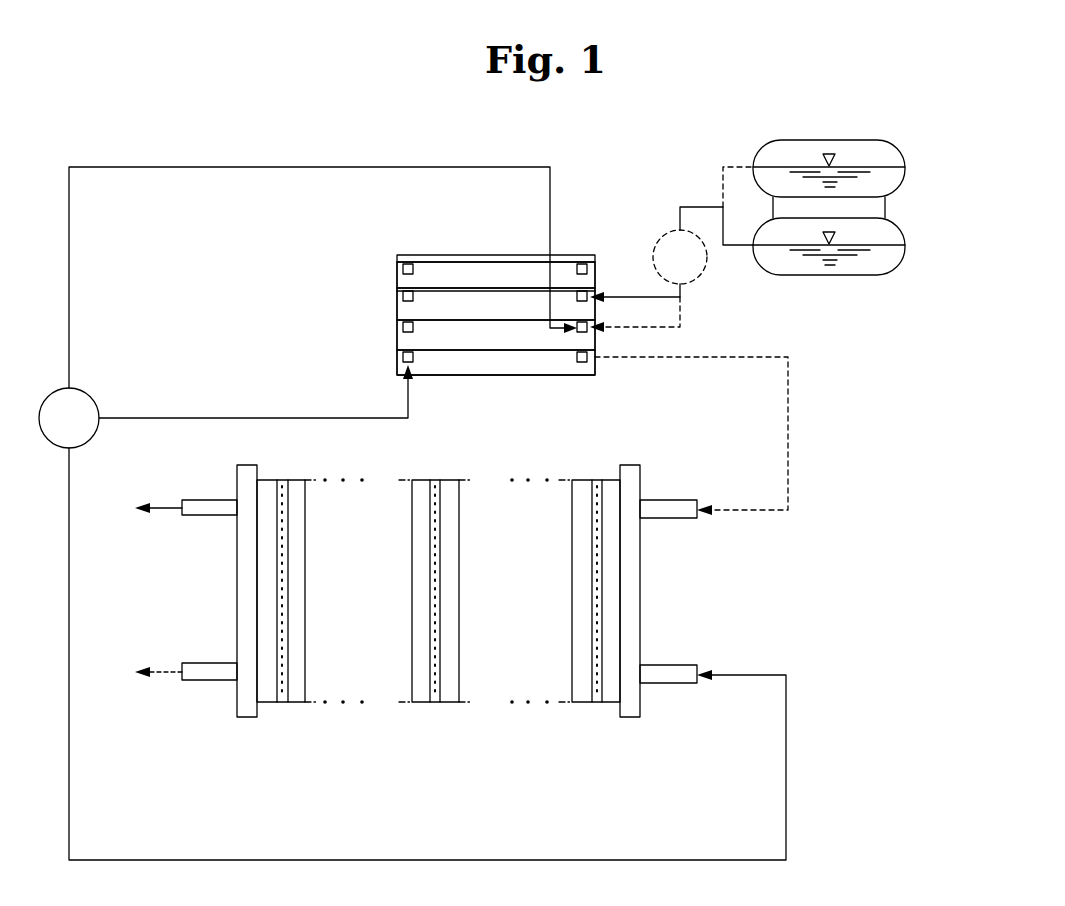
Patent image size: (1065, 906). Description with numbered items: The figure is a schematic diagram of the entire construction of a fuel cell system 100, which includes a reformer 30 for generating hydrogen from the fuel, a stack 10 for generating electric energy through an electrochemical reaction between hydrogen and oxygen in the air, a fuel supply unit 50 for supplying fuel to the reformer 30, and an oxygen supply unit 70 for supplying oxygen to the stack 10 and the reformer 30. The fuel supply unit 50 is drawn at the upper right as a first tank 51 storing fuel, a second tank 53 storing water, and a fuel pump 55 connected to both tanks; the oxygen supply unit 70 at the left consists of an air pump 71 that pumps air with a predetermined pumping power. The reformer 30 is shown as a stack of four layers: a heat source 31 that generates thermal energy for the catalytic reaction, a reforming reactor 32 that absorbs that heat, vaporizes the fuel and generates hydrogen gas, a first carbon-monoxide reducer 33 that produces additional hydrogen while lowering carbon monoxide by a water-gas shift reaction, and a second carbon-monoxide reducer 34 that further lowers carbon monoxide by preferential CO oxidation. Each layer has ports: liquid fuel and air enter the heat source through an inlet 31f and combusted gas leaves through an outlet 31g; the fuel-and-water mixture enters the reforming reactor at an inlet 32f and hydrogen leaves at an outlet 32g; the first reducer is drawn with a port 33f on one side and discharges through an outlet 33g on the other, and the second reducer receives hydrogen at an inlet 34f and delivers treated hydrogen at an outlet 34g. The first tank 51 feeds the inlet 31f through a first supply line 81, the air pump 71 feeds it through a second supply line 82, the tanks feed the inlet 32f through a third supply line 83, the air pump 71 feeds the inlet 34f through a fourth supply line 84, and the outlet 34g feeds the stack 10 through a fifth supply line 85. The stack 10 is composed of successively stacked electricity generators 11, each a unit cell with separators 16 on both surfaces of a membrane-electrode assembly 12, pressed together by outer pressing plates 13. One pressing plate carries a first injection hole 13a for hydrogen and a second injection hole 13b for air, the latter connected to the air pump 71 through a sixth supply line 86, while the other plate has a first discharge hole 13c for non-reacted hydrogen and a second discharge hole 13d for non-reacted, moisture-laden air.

The fuel cell system 100 is at (978, 250).
The stack 10 is at (705, 568).
The electricity generator 11 is at (468, 797).
The membrane-electrode assembly 12 is at (435, 703).
The separator 16 is at (420, 703).
The pressing plate 13 is at (635, 465).
The first injection hole 13a is at (685, 490).
The second injection hole 13b is at (685, 653).
The first discharge hole 13c is at (204, 663).
The second discharge hole 13d is at (204, 500).
The reformer 30 is at (508, 418).
The heat source 31 is at (397, 332).
The inlet 31f is at (577, 333).
The outlet 31g is at (415, 333).
The reforming reactor 32 is at (397, 302).
The inlet 32f is at (578, 292).
The outlet 32g is at (412, 295).
The first carbon-monoxide reducer 33 is at (397, 270).
The third layer outlet 33f is at (405, 265).
The outlet 33g is at (590, 268).
The second carbon-monoxide reducer 34 is at (397, 362).
The inlet 34f is at (416, 364).
The outlet 34g is at (578, 363).
The fuel supply unit 50 is at (938, 160).
The first tank 51 is at (803, 140).
The second tank 53 is at (805, 275).
The fuel pump 55 is at (666, 232).
The oxygen supply unit 70 is at (126, 380).
The air pump 71 is at (82, 391).
The first supply line 81 is at (682, 327).
The second supply line 82 is at (350, 167).
The third supply line 83 is at (635, 297).
The fourth supply line 84 is at (263, 418).
The fifth supply line 85 is at (790, 438).
The sixth supply line 86 is at (60, 517).